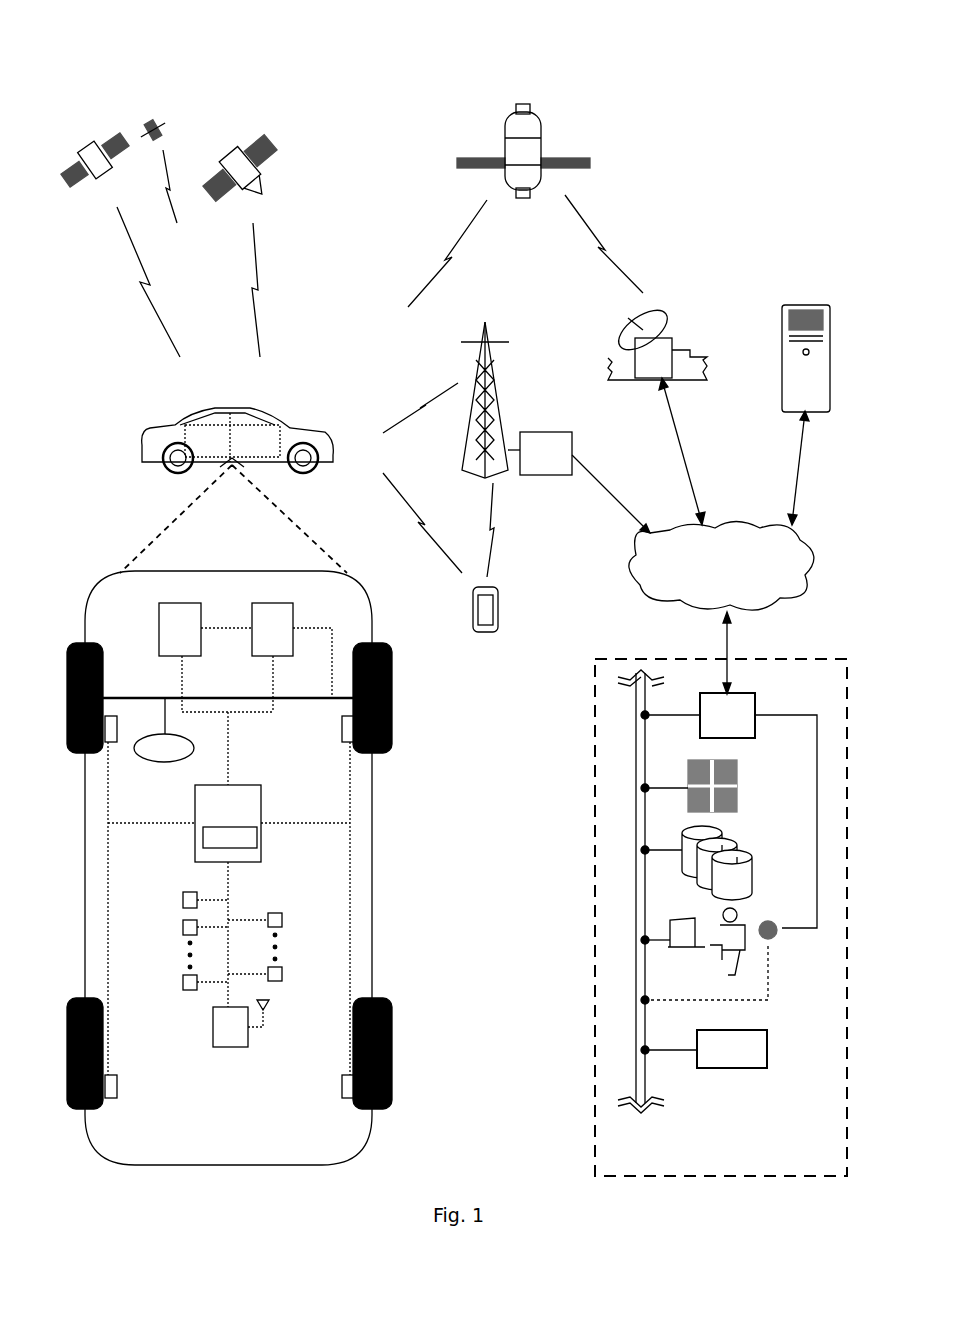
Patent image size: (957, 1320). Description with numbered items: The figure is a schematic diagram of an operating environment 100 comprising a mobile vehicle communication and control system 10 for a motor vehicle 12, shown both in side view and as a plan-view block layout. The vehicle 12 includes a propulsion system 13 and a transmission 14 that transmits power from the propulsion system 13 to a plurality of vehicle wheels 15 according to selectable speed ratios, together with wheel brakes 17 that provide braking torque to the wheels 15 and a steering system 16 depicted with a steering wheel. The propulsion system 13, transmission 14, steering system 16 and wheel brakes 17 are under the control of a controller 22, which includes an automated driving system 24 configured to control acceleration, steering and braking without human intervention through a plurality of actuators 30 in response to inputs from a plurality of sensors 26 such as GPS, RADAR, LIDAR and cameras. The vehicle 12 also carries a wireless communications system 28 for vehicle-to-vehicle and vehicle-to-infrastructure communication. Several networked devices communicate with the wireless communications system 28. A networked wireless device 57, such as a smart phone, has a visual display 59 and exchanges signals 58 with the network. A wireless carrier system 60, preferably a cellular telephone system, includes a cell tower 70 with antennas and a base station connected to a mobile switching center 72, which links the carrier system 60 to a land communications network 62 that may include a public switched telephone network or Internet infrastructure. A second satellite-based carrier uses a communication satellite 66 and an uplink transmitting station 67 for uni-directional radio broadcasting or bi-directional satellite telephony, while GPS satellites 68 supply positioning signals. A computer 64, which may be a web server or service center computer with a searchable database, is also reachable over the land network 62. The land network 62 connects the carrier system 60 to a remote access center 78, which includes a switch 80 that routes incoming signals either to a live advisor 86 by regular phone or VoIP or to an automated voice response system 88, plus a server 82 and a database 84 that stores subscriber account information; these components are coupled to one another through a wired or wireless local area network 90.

The system 100 is at (486, 30).
The mobile vehicle communication and control system 10 is at (757, 179).
The motor vehicle 12 is at (145, 450).
The propulsion system 13 is at (158, 630).
The transmission 14 is at (295, 612).
The vehicle wheels 15 is at (104, 665).
The steering system 16 is at (163, 762).
The wheel brakes 17 is at (340, 732).
The controller 22 is at (264, 835).
The automated driving system 24 is at (246, 852).
The sensors 26 is at (181, 897).
The wireless communications system 28 is at (226, 1048).
The actuators 30 is at (284, 922).
The networked wireless device 57 is at (498, 630).
The wireless signal 58 is at (422, 495).
The visual display 59 is at (490, 607).
The wireless carrier system 60 is at (462, 478).
The land communications network 62 is at (822, 565).
The computer 64 is at (836, 387).
The communication satellite 66 is at (545, 134).
The uplink transmitting station 67 is at (682, 353).
The GPS satellites 68 is at (288, 140).
The cell tower 70 is at (500, 402).
The mobile switching center 72 is at (543, 437).
The remote access center 78 is at (710, 1178).
The switch 80 is at (729, 810).
The server 82 is at (740, 782).
The database 84 is at (755, 862).
The live advisor 86 is at (707, 960).
The automated voice response system 88 is at (770, 1045).
The local area network 90 is at (646, 1098).